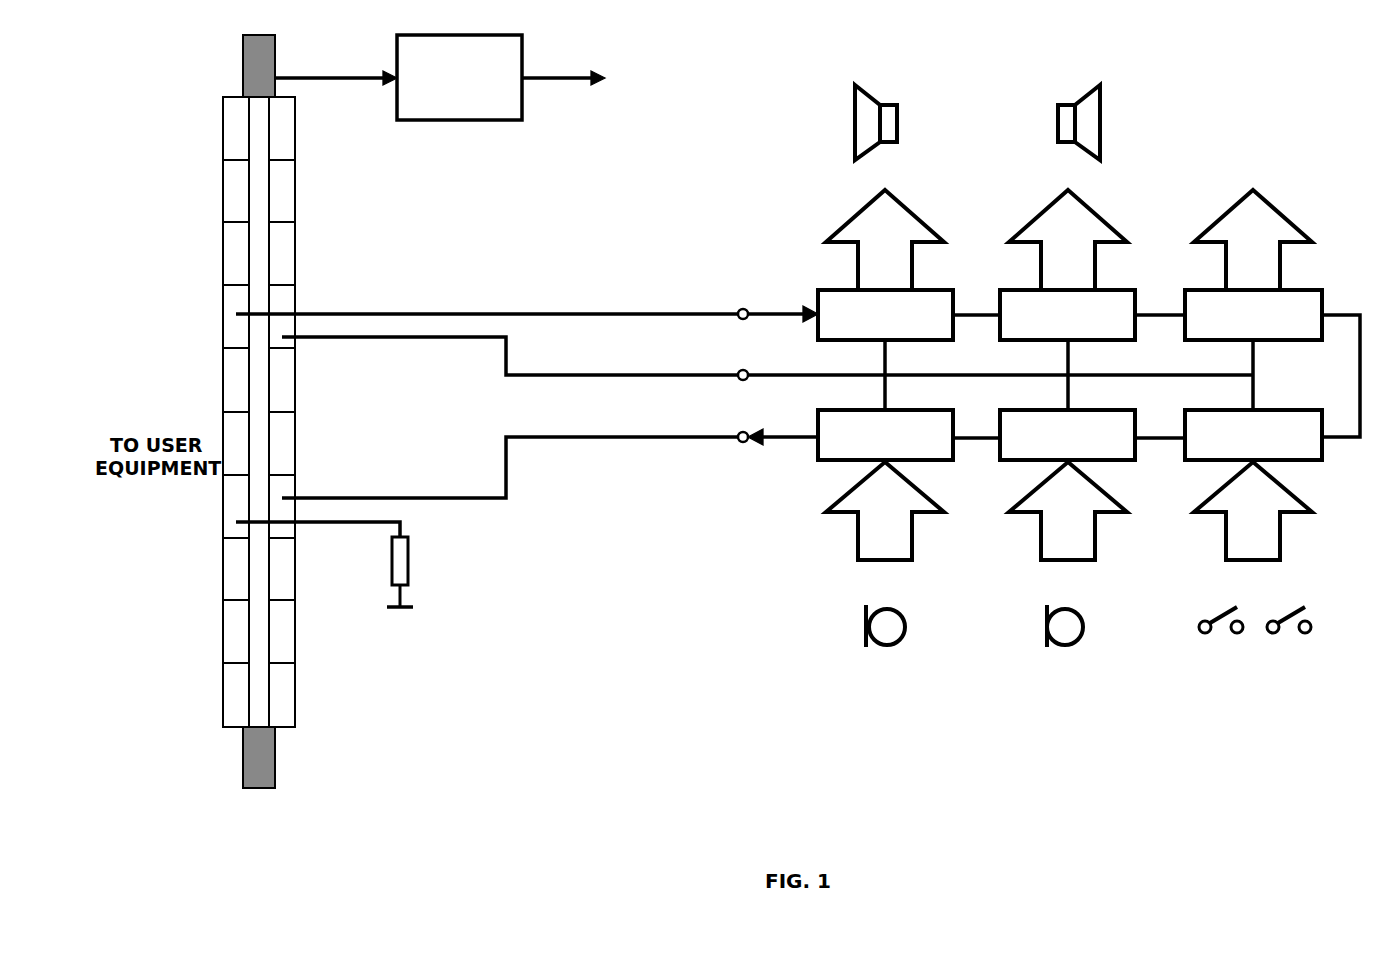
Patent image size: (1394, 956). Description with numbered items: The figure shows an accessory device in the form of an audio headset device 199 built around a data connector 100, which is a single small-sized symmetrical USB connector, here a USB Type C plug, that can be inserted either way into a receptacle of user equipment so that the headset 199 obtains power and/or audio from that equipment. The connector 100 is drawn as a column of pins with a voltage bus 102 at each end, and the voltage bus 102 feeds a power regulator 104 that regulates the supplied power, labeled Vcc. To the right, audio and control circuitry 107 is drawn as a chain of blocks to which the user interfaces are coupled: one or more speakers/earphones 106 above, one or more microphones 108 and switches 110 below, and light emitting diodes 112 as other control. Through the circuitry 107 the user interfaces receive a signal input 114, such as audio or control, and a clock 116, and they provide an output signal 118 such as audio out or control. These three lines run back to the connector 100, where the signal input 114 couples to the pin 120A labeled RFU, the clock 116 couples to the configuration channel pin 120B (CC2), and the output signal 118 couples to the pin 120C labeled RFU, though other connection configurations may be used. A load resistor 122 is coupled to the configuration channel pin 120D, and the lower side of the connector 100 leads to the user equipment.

The data connector 100 is at (224, 104).
The voltage bus 102 is at (276, 47).
The power regulator 104 is at (472, 77).
The speakers/earphones 106 is at (1052, 122).
The audio and control circuitry 107 is at (1070, 375).
The microphones 108 is at (1047, 626).
The switches 110 is at (1200, 630).
The light emitting diodes 112 is at (1218, 152).
The signal input 114 is at (527, 301).
The clock 116 is at (767, 358).
The output signal 118 is at (550, 450).
The pin 120A is at (223, 305).
The configuration channel pin 120B is at (296, 305).
The pin 120C is at (296, 493).
The configuration channel pin 120D is at (222, 517).
The load resistor 122 is at (406, 578).
The audio headset device 199 is at (1046, 287).